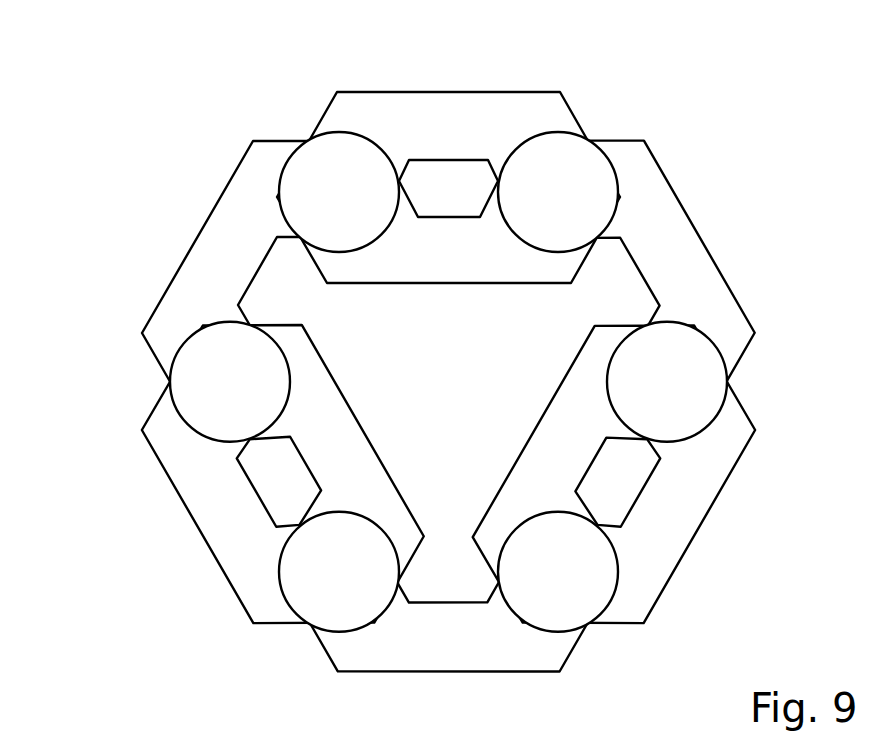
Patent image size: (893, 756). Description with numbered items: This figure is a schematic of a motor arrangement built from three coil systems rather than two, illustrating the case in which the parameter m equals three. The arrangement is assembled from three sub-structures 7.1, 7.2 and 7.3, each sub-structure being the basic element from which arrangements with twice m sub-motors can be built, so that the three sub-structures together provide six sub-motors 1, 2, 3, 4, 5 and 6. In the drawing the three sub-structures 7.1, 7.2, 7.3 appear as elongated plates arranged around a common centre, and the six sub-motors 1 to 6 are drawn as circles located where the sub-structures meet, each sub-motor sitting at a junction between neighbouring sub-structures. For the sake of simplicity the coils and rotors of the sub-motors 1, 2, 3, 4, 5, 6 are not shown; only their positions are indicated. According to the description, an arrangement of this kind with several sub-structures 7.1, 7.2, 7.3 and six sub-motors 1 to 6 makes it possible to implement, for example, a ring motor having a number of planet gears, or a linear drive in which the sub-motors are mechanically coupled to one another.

The sub-motor 1 is at (583, 576).
The sub-motor 2 is at (680, 367).
The sub-motor 3 is at (583, 180).
The sub-motor 4 is at (312, 192).
The sub-motor 5 is at (210, 395).
The sub-motor 6 is at (322, 587).
The sub-structure 7.1 is at (722, 533).
The sub-structure 7.2 is at (540, 81).
The sub-structure 7.3 is at (193, 543).